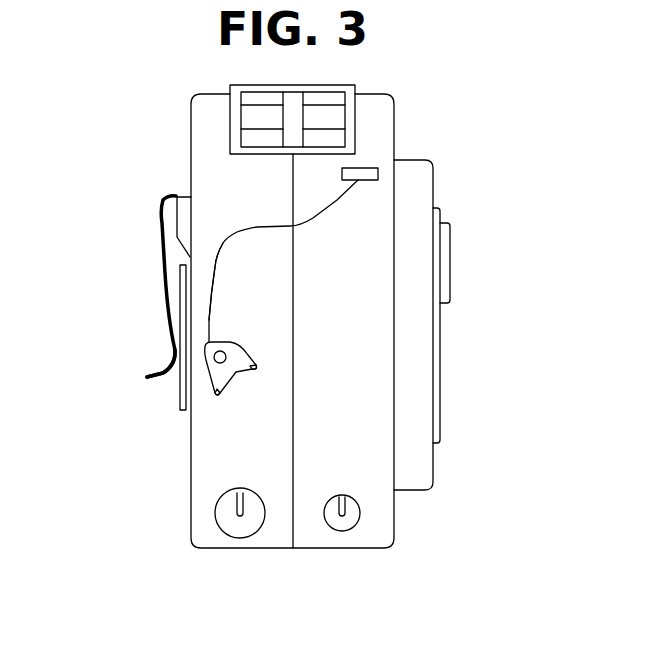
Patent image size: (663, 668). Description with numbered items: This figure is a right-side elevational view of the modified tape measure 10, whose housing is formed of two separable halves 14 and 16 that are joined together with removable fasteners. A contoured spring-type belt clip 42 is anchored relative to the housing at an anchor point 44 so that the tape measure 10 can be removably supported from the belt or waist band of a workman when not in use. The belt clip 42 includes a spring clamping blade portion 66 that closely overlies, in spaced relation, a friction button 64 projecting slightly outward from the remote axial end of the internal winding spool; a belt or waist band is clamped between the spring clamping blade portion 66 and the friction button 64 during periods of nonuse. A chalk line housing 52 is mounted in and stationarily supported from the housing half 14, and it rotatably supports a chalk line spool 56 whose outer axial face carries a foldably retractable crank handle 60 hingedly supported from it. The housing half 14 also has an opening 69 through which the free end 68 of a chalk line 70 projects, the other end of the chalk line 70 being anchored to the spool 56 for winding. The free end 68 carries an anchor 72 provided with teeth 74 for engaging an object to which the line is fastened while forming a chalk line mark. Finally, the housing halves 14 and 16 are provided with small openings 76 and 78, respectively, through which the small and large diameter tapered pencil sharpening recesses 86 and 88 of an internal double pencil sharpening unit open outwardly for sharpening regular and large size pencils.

The tape measure 10 is at (378, 94).
The housing half 14 is at (380, 518).
The housing half 16 is at (202, 482).
The belt clip 42 is at (160, 218).
The anchor point 44 is at (185, 195).
The chalk line housing 52 is at (422, 463).
The chalk line spool 56 is at (435, 410).
The crank handle 60 is at (448, 293).
The friction button 64 is at (183, 387).
The spring clamping blade portion 66 is at (173, 350).
The free end 68 is at (210, 322).
The opening 69 is at (362, 168).
The chalk line 70 is at (327, 207).
The anchor 72 is at (228, 373).
The teeth 74 is at (256, 370).
The small opening 76 is at (357, 523).
The small opening 78 is at (215, 520).
The small diameter tapered pencil sharpening recess 86 is at (332, 522).
The large diameter tapered pencil sharpening recess 88 is at (247, 527).